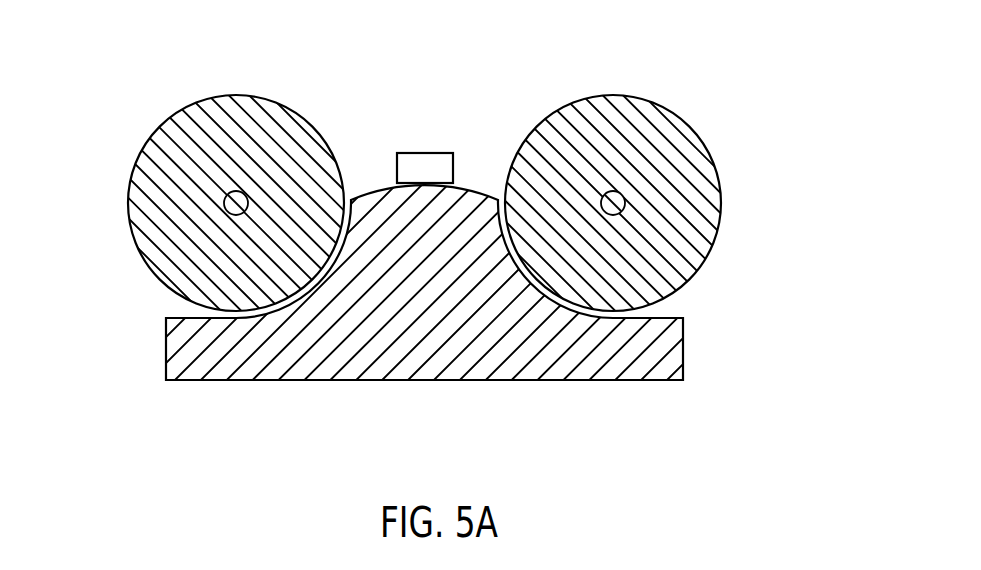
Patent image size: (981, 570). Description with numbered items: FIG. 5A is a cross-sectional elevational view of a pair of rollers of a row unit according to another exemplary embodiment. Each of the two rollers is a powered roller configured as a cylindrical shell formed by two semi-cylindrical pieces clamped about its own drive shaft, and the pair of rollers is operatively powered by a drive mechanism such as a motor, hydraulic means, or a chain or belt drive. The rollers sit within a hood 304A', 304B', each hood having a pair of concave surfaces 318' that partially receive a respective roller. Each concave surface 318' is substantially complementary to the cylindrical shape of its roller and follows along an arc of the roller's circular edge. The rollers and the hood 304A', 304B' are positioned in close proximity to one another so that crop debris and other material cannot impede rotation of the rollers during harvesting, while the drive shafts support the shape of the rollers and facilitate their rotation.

The hood 304A' is at (424, 326).
The hood 304B' is at (424, 326).
The concave surface 318' is at (427, 368).